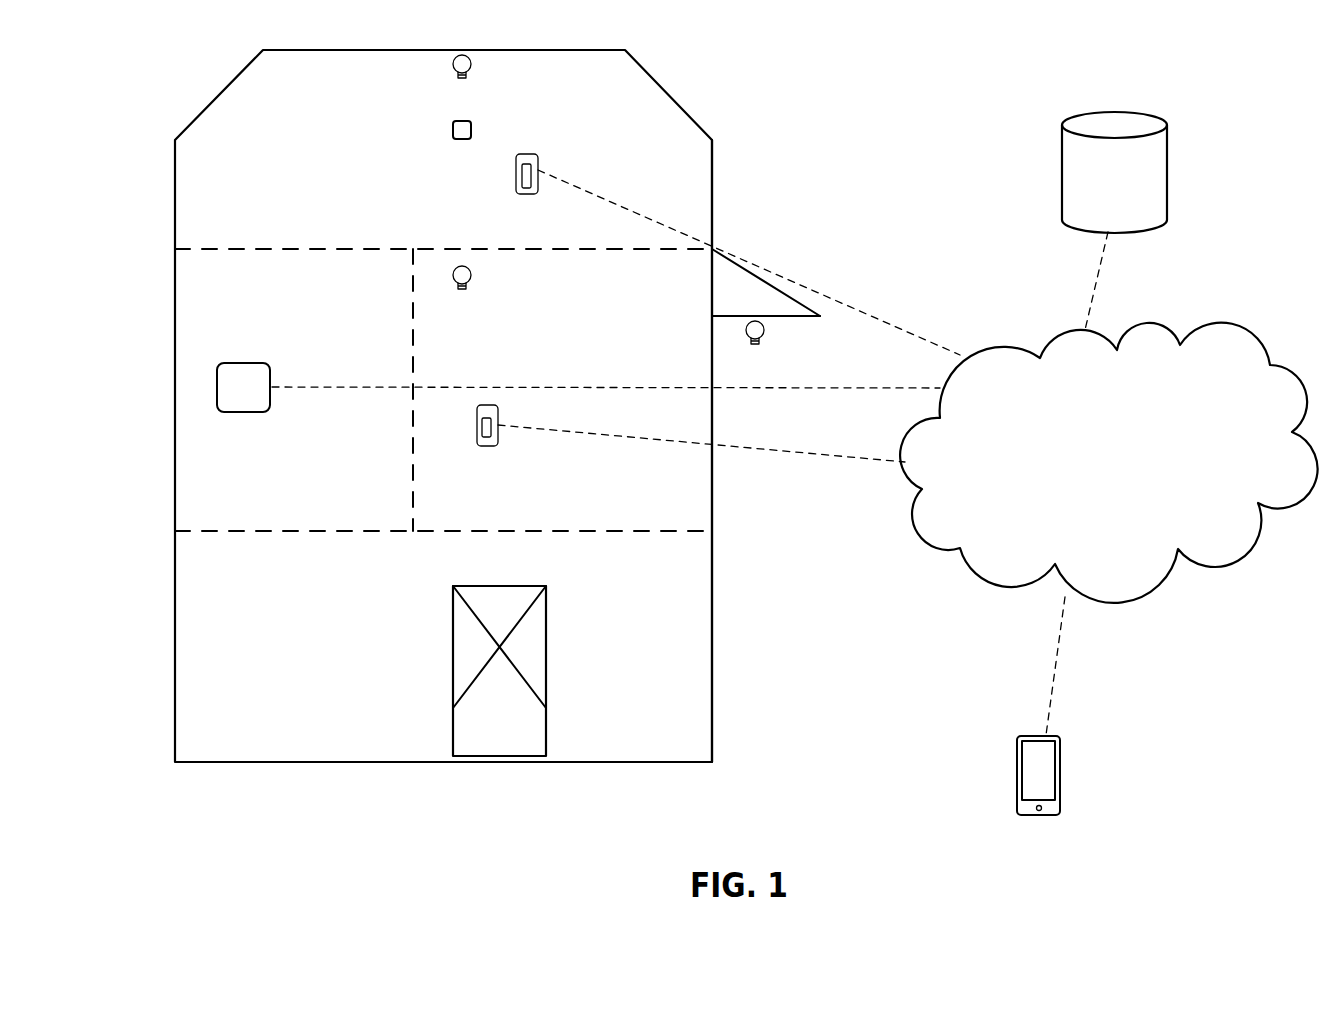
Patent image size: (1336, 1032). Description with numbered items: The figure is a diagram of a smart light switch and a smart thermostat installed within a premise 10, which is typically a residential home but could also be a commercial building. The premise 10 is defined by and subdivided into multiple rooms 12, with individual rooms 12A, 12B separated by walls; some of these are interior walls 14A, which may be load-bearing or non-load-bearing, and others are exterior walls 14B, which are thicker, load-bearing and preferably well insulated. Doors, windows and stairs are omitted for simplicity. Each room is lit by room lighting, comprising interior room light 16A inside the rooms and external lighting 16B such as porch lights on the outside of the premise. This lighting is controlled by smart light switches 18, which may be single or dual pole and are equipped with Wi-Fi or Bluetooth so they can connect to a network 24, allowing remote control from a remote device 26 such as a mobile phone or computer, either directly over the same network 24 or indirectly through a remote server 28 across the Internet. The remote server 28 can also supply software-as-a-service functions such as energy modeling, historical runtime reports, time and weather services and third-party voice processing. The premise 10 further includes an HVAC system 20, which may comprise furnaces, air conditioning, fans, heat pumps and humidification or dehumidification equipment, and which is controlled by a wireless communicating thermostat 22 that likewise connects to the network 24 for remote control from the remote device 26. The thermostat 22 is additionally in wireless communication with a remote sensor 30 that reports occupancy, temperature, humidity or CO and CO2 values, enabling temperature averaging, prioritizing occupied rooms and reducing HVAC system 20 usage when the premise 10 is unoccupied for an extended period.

The premise 10 is at (150, 292).
The room 12 is at (308, 641).
The first room 12A is at (672, 310).
The second room 12B is at (305, 493).
The interior wall 14A is at (413, 470).
The exterior wall 14B is at (713, 465).
The interior room light 16A is at (482, 88).
The external lighting 16B is at (792, 360).
The smart light switch 18 is at (538, 182).
The HVAC system 20 is at (513, 744).
The thermostat 22 is at (260, 404).
The network 24 is at (1122, 484).
The remote device 26 is at (1086, 806).
The remote server 28 is at (1129, 194).
The remote sensor 30 is at (452, 130).